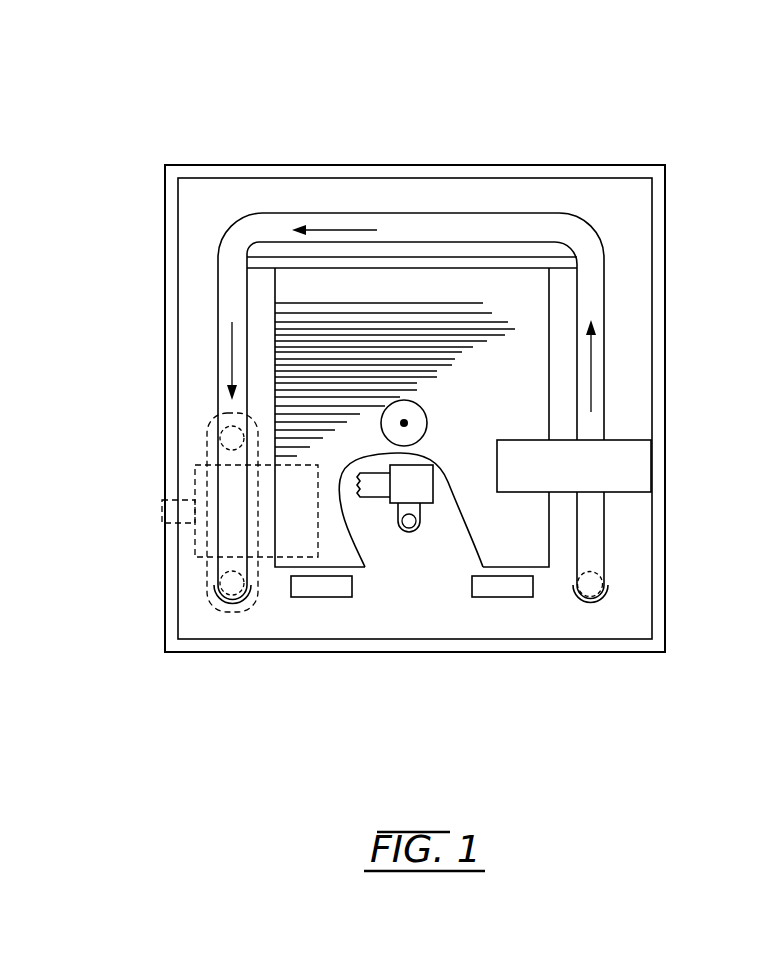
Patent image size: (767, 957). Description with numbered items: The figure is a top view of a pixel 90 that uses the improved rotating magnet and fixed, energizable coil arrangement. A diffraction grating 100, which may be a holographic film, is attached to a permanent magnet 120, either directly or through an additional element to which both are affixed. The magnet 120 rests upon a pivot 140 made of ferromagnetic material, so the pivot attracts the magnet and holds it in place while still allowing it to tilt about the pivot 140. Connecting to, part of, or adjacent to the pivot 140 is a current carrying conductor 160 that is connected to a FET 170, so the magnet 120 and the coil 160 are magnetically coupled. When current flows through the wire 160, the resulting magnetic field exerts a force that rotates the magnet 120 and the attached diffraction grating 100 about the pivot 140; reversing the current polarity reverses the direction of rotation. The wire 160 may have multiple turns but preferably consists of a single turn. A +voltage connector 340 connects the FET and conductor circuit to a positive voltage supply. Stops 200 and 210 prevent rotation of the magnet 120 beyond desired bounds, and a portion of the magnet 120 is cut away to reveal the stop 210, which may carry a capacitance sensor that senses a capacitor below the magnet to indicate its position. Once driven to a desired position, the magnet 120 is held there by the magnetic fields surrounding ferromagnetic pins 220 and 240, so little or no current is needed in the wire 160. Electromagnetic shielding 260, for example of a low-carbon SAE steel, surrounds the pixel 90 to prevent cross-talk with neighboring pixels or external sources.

The pixel 90 is at (499, 114).
The electromagnetic shielding 260 is at (255, 165).
The pivot 140 is at (354, 257).
The current carrying conductor 160 is at (230, 288).
The permanent magnet 120 is at (527, 377).
The diffraction grating 100 is at (275, 373).
The FET 170 is at (205, 472).
The +voltage connector 340 is at (157, 520).
The stop 200 is at (648, 455).
The stop 210 is at (394, 503).
The ferromagnetic pin 220 is at (322, 597).
The ferromagnetic pin 240 is at (502, 594).